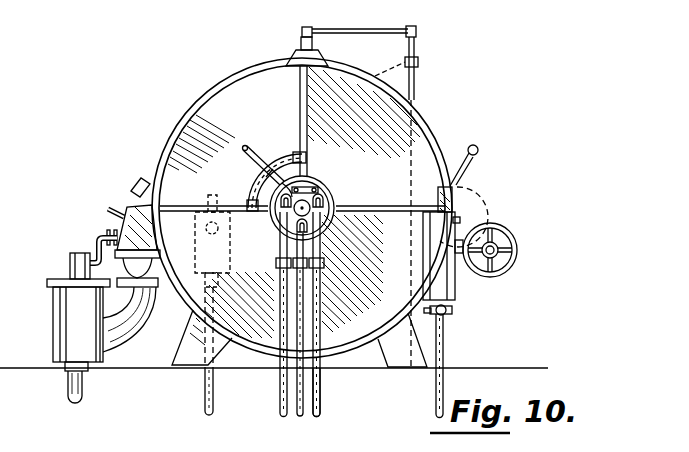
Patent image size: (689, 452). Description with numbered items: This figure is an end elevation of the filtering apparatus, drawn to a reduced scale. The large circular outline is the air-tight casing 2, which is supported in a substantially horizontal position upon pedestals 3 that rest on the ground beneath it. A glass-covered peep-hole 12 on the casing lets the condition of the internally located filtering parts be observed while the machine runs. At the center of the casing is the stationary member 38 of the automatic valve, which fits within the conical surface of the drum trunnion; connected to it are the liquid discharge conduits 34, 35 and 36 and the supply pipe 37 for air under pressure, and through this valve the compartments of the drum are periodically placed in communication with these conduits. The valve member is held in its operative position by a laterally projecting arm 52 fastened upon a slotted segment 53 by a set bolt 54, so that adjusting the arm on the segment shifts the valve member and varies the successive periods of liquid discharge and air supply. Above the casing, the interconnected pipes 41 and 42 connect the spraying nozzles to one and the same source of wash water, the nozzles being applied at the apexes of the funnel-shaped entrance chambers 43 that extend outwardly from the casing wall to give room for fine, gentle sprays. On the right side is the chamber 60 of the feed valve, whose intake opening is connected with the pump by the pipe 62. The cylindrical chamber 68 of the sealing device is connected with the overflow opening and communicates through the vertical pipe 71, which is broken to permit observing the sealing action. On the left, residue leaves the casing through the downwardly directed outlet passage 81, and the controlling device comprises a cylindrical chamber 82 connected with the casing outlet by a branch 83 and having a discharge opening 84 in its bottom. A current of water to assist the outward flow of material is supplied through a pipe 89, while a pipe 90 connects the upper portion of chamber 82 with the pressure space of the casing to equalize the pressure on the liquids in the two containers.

The air-tight casing 2 is at (302, 192).
The pedestals 3 is at (223, 362).
The glass-covered peep-hole 12 is at (147, 181).
The liquid discharge conduit 34 is at (309, 321).
The liquid discharge conduit 35 is at (321, 390).
The liquid discharge conduit 36 is at (281, 286).
The supply pipe for air under pressure 37 is at (303, 284).
The stationary member of the valve 38 is at (322, 193).
The interconnected pipe 41 is at (364, 24).
The interconnected pipe 42 is at (417, 84).
The funnel-shaped entrance chamber 43 is at (393, 73).
The laterally projecting arm 52 is at (255, 157).
The slotted segment 53 is at (277, 165).
The set bolt 54 is at (256, 172).
The valve chamber 60 is at (458, 305).
The pipe 62 is at (447, 349).
The cylindrical chamber 68 is at (230, 245).
The vertical pipe 71 is at (205, 390).
The outlet passage 81 is at (122, 224).
The cylindrical chamber 82 is at (58, 322).
The branch 83 is at (137, 316).
The discharge opening 84 is at (88, 388).
The pipe 89 is at (113, 207).
The pipe 90 is at (97, 241).